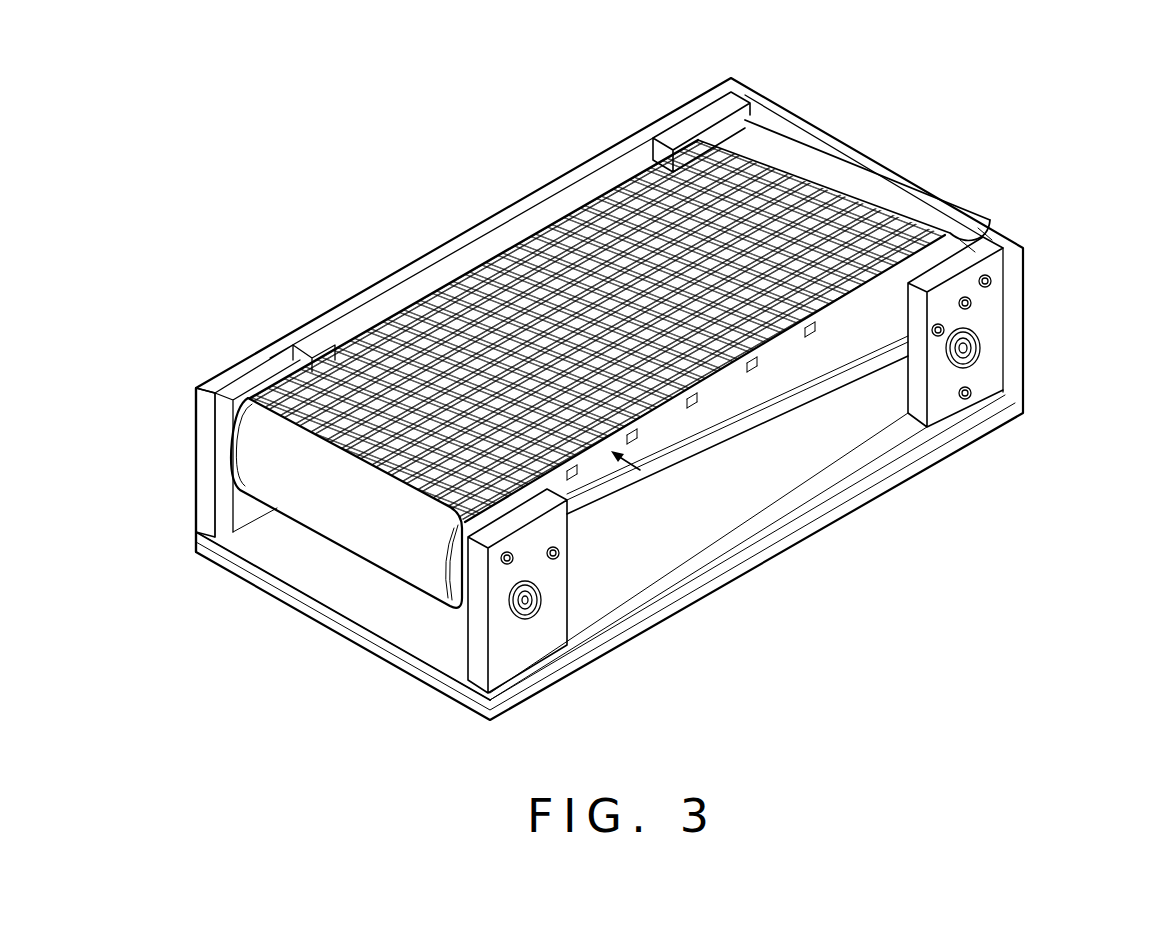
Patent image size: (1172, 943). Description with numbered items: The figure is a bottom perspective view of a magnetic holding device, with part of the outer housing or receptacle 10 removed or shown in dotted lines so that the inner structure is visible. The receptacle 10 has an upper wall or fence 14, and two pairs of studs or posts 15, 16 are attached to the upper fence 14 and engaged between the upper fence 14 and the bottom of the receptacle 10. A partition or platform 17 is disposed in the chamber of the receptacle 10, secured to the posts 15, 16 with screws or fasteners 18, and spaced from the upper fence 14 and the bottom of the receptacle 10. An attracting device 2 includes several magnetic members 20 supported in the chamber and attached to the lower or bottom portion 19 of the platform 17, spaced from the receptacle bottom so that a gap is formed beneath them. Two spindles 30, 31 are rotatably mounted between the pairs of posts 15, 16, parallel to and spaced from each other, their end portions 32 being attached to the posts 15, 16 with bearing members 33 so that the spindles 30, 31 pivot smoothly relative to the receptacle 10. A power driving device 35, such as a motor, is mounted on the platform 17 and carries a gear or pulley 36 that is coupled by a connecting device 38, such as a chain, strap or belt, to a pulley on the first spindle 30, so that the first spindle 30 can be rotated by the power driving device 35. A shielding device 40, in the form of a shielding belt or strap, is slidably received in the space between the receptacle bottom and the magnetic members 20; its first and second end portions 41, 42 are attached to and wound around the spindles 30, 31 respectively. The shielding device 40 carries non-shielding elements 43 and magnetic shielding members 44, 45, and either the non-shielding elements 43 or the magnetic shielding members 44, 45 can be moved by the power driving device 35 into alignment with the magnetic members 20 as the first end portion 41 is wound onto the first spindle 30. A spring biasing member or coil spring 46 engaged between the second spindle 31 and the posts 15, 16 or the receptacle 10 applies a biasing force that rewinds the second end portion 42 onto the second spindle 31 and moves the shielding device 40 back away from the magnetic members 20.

The attracting device 2 is at (640, 505).
The receptacle 10 is at (822, 128).
The upper fence 14 is at (272, 598).
The post 15 is at (218, 461).
The post 16 is at (705, 122).
The platform 17 is at (850, 325).
The fasteners 18 is at (945, 332).
The bottom portion of the platform 19 is at (815, 318).
The magnetic members 20 is at (840, 332).
The first spindle 30 is at (520, 605).
The second spindle 31 is at (968, 356).
The end portions 32 is at (530, 604).
The bearing members 33 is at (977, 348).
The power driving device 35 is at (600, 510).
The pulley 36 is at (610, 535).
The connecting device 38 is at (580, 545).
The shielding device 40 is at (262, 396).
The first end portion 41 is at (455, 590).
The second end portion 42 is at (962, 252).
The non-shielding elements 43 is at (503, 262).
The magnetic shielding member 44 is at (333, 357).
The magnetic shielding member 45 is at (880, 200).
The coil spring 46 is at (905, 432).